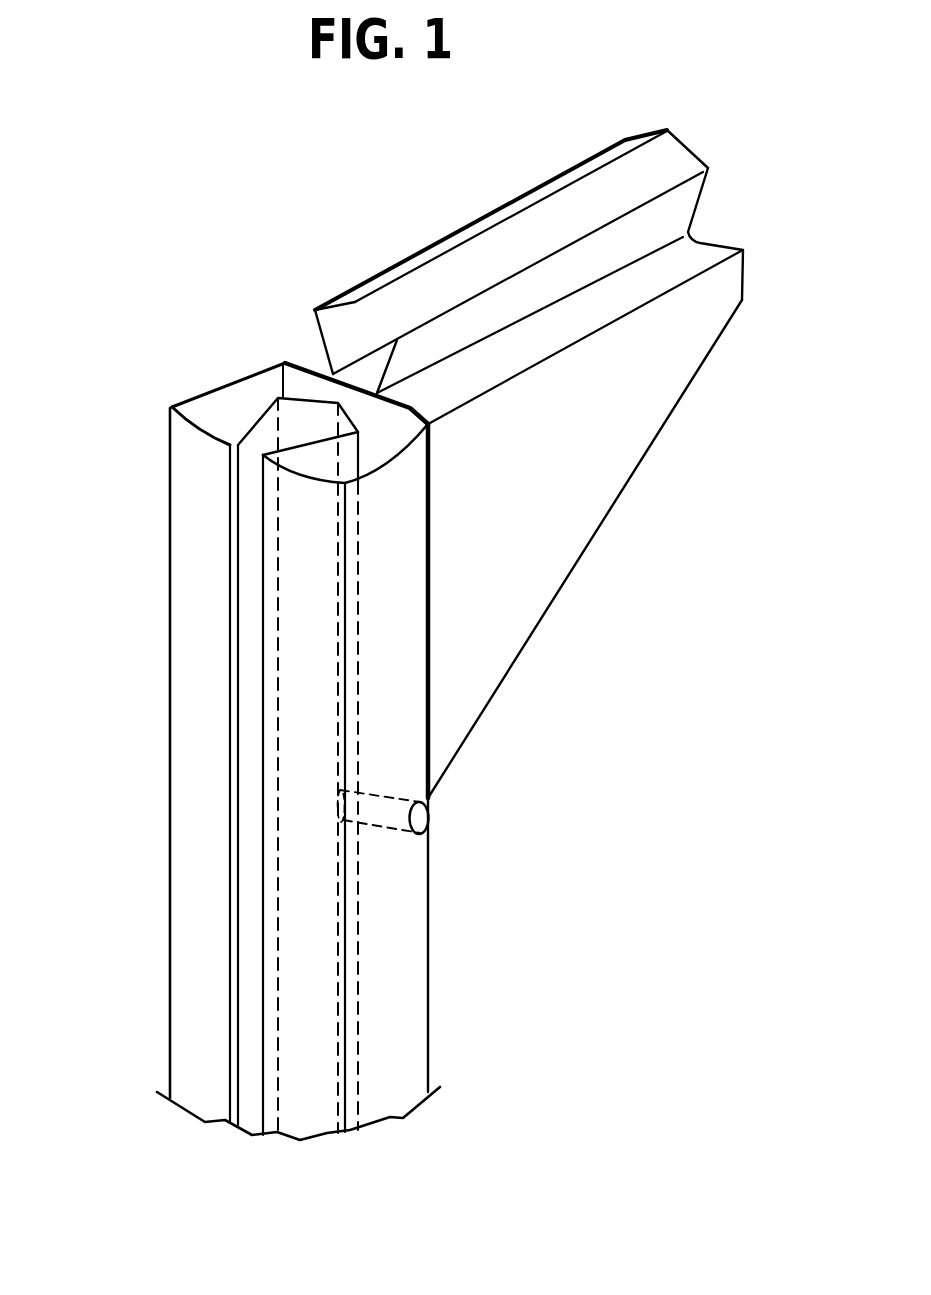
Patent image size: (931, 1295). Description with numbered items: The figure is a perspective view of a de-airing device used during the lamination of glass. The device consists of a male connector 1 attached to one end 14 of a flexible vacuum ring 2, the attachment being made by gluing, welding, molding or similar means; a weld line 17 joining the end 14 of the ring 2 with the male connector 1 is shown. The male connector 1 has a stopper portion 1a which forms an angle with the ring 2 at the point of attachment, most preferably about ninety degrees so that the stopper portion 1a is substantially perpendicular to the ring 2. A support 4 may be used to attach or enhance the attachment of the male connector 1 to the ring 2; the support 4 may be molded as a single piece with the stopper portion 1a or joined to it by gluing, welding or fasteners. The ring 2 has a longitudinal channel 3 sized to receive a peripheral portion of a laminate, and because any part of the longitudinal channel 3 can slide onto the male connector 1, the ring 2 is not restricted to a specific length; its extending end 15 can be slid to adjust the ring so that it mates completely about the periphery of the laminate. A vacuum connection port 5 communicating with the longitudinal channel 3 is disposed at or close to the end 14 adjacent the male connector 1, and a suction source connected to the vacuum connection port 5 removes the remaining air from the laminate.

The male connector 1 is at (752, 214).
The stopper portion 1a is at (677, 133).
The flexible vacuum ring 2 is at (172, 638).
The longitudinal channel 3 is at (268, 432).
The support 4 is at (585, 505).
The vacuum connection port 5 is at (413, 837).
The one end 14 is at (170, 423).
The extending end 15 is at (398, 1118).
The weld line 17 is at (305, 362).